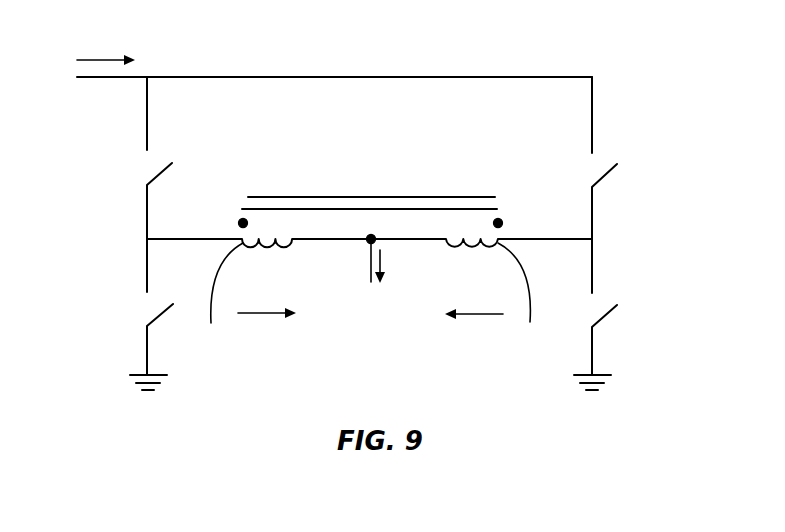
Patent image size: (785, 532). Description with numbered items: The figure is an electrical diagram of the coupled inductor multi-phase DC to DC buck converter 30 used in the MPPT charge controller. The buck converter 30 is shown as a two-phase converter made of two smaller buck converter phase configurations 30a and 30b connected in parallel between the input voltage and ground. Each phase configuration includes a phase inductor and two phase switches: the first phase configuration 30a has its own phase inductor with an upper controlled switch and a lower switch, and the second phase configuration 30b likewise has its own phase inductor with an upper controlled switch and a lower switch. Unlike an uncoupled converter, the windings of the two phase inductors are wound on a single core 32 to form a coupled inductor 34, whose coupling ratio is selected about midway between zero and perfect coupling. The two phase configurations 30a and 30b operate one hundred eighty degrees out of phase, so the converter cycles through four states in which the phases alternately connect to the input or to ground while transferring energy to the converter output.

The coupled inductor multi-phase DC to DC buck converter 30 is at (437, 42).
The buck converter phase configuration 30a is at (120, 235).
The buck converter phase configuration 30b is at (603, 254).
The core 32 is at (428, 210).
The coupled inductor 34 is at (334, 186).